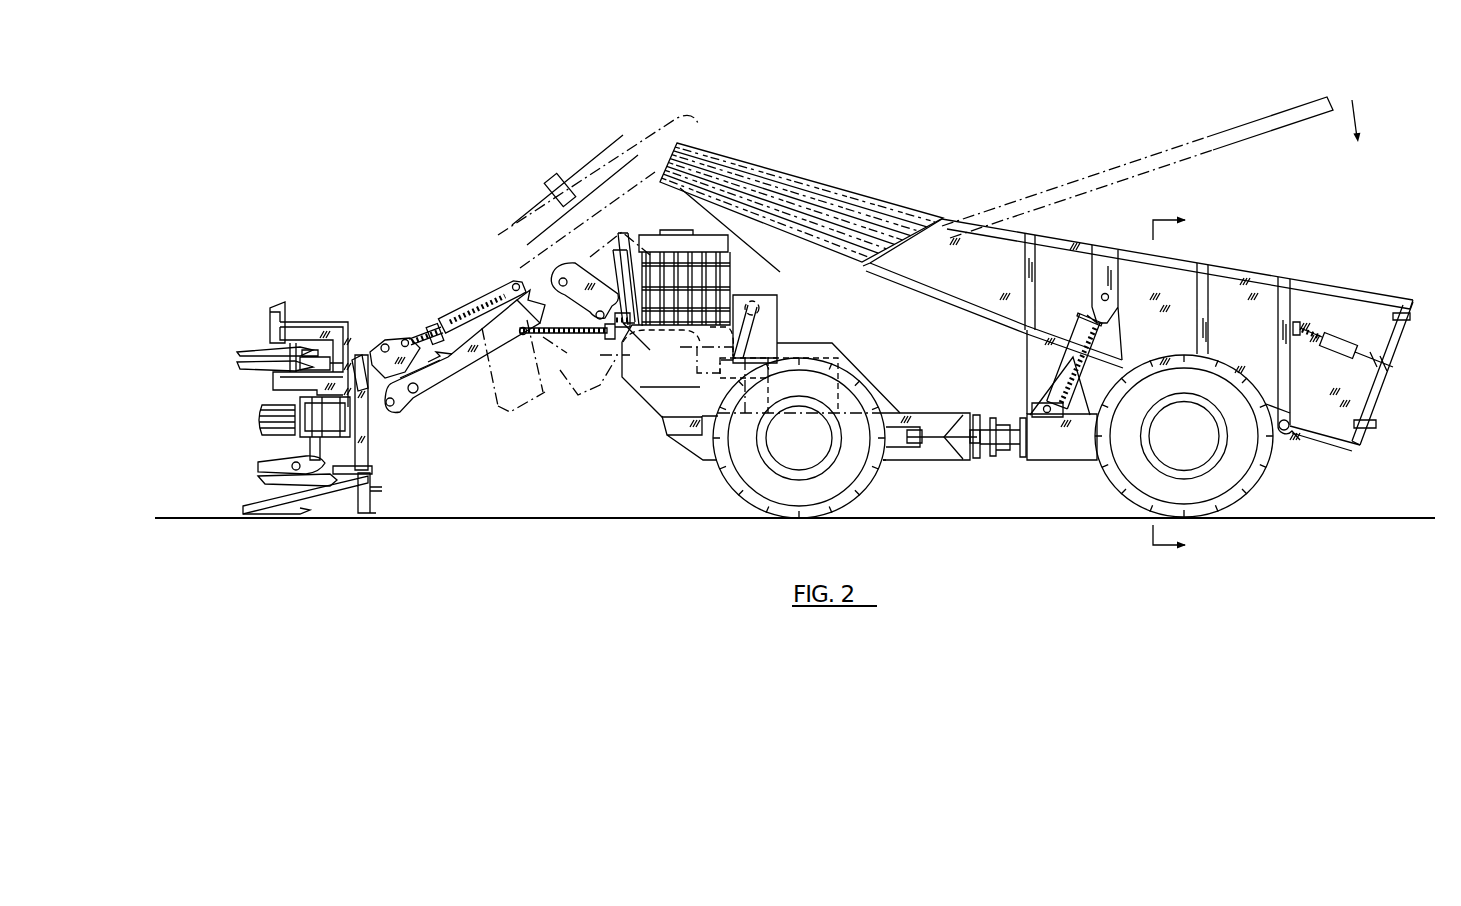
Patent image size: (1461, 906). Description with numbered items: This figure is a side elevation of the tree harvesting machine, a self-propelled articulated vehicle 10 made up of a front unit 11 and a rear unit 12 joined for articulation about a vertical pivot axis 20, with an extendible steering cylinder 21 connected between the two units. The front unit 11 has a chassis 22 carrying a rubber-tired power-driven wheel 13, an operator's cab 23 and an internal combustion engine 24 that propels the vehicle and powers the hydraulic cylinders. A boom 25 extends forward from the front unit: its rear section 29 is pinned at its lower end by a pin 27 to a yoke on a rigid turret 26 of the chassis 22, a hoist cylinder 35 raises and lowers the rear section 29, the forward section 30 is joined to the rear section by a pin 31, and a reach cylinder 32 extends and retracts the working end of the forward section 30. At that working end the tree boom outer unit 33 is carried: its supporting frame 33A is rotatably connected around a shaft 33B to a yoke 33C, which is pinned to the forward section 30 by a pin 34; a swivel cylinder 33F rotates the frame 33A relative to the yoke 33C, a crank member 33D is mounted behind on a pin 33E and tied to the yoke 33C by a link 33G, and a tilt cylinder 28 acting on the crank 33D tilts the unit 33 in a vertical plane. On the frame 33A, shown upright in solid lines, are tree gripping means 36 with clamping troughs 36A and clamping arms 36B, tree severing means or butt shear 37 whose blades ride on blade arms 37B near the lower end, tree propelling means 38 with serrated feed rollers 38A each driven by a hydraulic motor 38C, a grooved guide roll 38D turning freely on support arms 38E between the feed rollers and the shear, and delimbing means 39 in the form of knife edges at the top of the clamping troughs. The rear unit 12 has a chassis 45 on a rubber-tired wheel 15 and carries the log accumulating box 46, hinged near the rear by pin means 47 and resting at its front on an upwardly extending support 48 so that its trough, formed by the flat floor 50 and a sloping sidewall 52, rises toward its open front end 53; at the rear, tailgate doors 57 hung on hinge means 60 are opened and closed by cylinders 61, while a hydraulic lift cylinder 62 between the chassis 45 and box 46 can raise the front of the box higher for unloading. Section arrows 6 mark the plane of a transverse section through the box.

The section line 6- 6 is at (1169, 380).
The self-propelled articulated vehicle 10 is at (470, 170).
The front unit 11 is at (657, 427).
The rear unit 12 is at (1054, 304).
The right rubber-tired power-driven wheel 13 is at (726, 478).
The right rubber-tired wheel 15 is at (1269, 468).
The vertical pivot axis 20 is at (985, 414).
The extendible hydraulic cylinder 21 is at (938, 432).
The chassis 22 is at (913, 461).
The operator's cab 23 is at (642, 380).
The internal combustion engine 24 is at (857, 400).
The boom 25 is at (517, 322).
The rigid turret 26 is at (697, 392).
The pin 27 is at (760, 307).
The tilt cylinder 28 is at (447, 315).
The rear boom section 29 is at (587, 271).
The forward boom section 30 is at (460, 366).
The pin 31 is at (567, 297).
The reach cylinder 32 is at (628, 333).
The tree boom outer unit 33 is at (291, 413).
The supporting frame 33A is at (300, 322).
The shaft 33B is at (355, 352).
The yoke 33C is at (372, 418).
The crank member 33D is at (388, 342).
The pin 33E is at (420, 398).
The swivel cylinder 33F is at (360, 457).
The link 33G is at (372, 352).
The pin 34 is at (393, 408).
The hoist cylinder 35 is at (688, 347).
The tree gripping means 36 is at (252, 345).
The clamping troughs 36A is at (272, 312).
The clamping arms 36B is at (238, 364).
The tree severing means 37 is at (276, 500).
The blade arm 37B is at (303, 512).
The tree propelling means 38 is at (250, 432).
The feed rollers 38A is at (258, 410).
The hydraulic motor 38C is at (312, 426).
The grooved tree guide roll 38D is at (262, 462).
The support arms 38E is at (270, 466).
The delimbing means 39 is at (277, 302).
The chassis 45 is at (1076, 461).
The tree or log accumulating box 46 is at (1276, 276).
The pin means 47 is at (1294, 431).
The support 48 is at (1024, 370).
The flat floor 50 is at (1020, 306).
The sidewall 52 is at (1223, 278).
The opening 53 is at (862, 263).
The tailgate doors 57 is at (1388, 392).
The pivot or hinge means 60 is at (1410, 316).
The cylinders 61 is at (1331, 337).
The lift cylinder 62 is at (1060, 378).